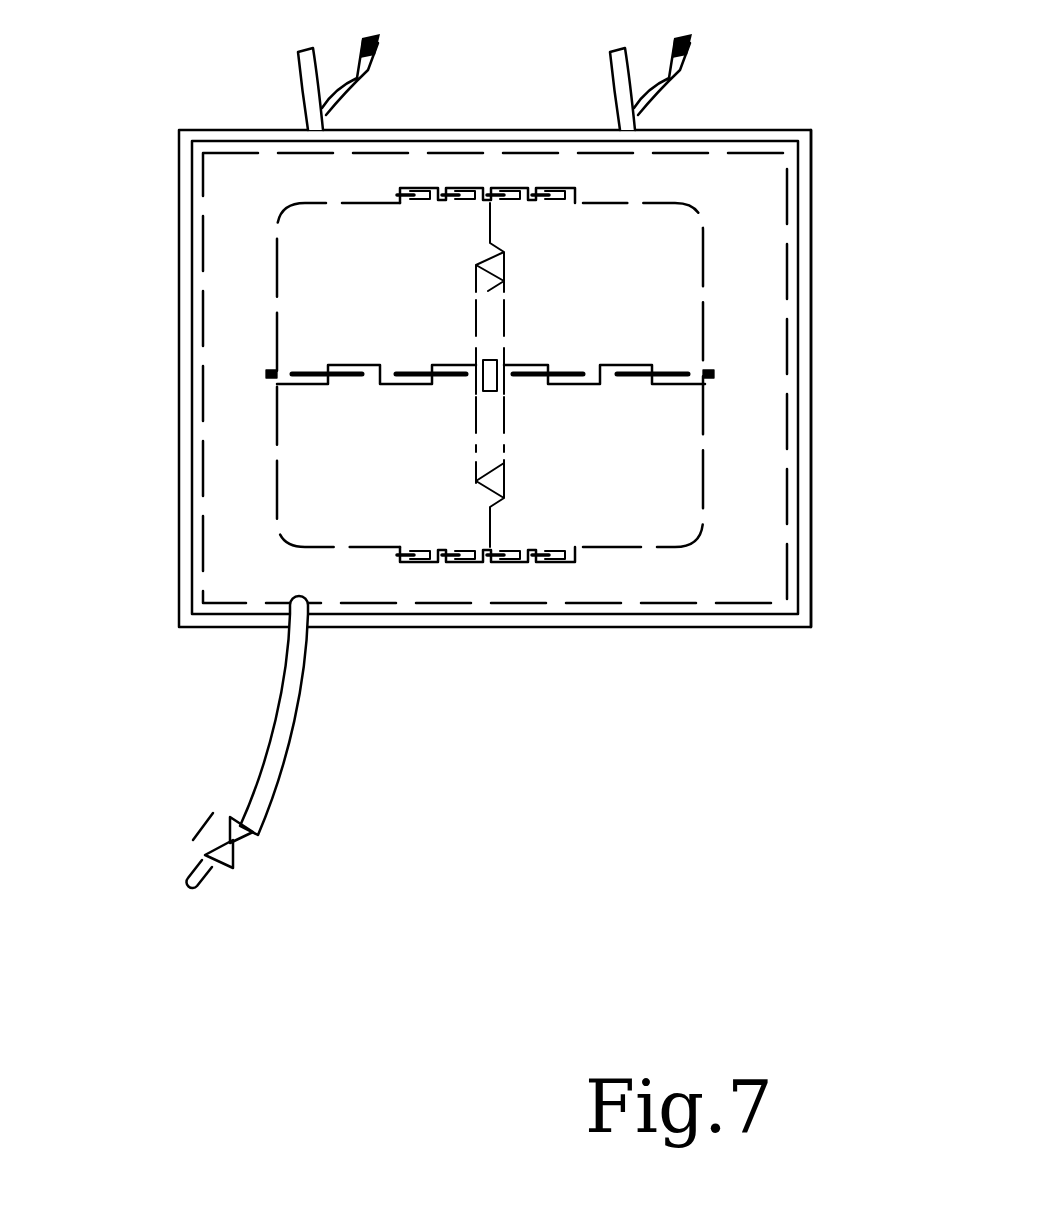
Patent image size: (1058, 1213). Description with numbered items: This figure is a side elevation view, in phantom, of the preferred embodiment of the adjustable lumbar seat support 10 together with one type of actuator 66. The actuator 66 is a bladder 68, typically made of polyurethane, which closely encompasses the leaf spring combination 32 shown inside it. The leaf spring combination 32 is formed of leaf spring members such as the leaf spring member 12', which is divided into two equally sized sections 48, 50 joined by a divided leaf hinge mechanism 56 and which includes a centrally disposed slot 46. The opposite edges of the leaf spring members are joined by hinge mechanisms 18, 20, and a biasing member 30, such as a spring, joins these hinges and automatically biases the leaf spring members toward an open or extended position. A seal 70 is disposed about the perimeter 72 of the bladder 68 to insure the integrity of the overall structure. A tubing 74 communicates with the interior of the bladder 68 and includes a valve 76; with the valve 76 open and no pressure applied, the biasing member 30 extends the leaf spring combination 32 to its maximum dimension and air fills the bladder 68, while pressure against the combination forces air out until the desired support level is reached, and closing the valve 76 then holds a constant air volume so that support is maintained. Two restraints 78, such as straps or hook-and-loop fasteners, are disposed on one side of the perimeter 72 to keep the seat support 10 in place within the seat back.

The adjustable lumbar seat support 10 is at (714, 229).
The leaf spring member 12' is at (601, 330).
The hinge mechanism 18 is at (580, 560).
The hinge mechanism 20 is at (582, 190).
The biasing member 30 is at (458, 247).
The leaf spring combination 32 is at (243, 474).
The slot 46 is at (516, 400).
The section 48 is at (625, 306).
The section 50 is at (625, 501).
The divided leaf hinge mechanism 56 is at (715, 377).
The actuator 66 is at (160, 317).
The bladder 68 is at (690, 199).
The seal 70 is at (801, 403).
The perimeter 72 is at (822, 360).
The tubing 74 is at (305, 670).
The valve 76 is at (252, 832).
The restraints 78 is at (367, 77).